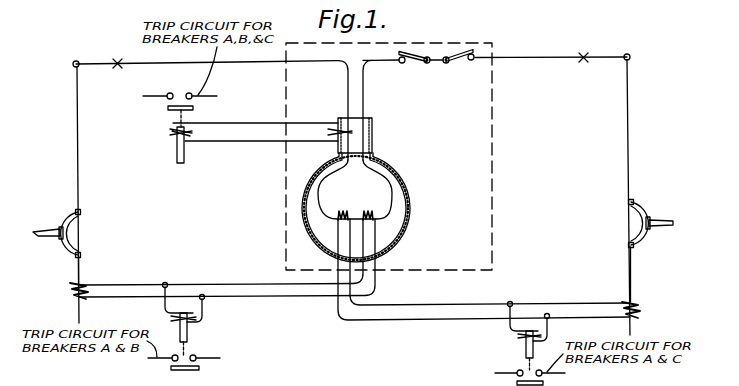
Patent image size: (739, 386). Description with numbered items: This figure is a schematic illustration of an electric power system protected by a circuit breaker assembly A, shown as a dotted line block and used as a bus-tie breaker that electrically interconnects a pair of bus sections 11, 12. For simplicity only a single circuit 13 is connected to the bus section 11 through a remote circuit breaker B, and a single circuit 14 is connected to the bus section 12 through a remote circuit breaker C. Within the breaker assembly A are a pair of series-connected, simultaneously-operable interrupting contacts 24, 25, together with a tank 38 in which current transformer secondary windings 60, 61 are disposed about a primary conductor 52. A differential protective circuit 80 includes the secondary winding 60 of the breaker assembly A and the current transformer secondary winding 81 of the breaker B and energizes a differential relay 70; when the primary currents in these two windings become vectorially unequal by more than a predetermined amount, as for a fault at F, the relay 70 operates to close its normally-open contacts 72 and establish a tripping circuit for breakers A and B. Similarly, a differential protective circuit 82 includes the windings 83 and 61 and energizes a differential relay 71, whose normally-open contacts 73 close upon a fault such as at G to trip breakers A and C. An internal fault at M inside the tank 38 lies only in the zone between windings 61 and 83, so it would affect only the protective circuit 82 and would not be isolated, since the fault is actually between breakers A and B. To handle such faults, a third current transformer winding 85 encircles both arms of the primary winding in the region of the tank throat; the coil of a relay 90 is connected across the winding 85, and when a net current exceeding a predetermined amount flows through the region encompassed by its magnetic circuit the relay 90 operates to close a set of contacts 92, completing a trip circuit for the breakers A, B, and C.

The bus section 11 is at (93, 63).
The bus section 12 is at (609, 55).
The circuit 13 is at (81, 270).
The circuit 14 is at (628, 271).
The fault location F is at (119, 59).
The fault location G is at (584, 53).
The circuit breaker assembly A is at (472, 43).
The remote circuit breaker B is at (72, 233).
The remote circuit breaker C is at (631, 222).
The interrupting contacts 24 is at (419, 63).
The interrupting contacts 25 is at (458, 63).
The third current transformer winding 85 is at (376, 127).
The relay 90 is at (173, 142).
The contacts 92 is at (169, 93).
The fault location M is at (407, 199).
The tank 38 is at (404, 229).
The primary conductor 52 is at (327, 214).
The current transformer secondary winding 60 is at (372, 212).
The current transformer secondary winding 61 is at (340, 212).
The differential protective circuit 80 is at (244, 283).
The current transformer secondary winding 81 is at (70, 290).
The differential protective circuit 82 is at (462, 304).
The current transformer winding 83 is at (635, 304).
The differential relay 70 is at (194, 320).
The differential relay 71 is at (523, 337).
The normally-open contacts 72 is at (195, 355).
The normally-open contacts 73 is at (521, 371).